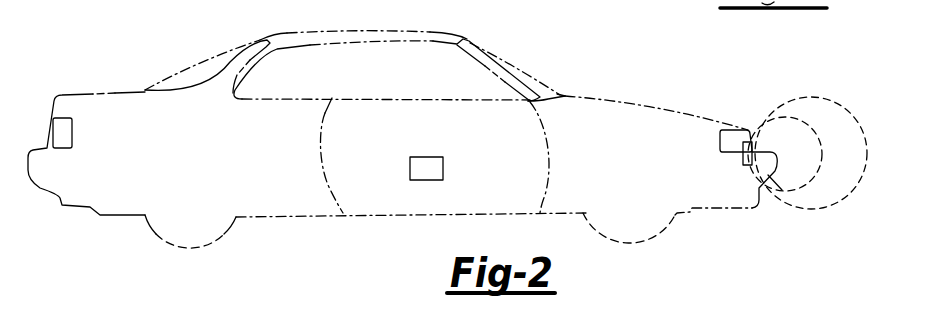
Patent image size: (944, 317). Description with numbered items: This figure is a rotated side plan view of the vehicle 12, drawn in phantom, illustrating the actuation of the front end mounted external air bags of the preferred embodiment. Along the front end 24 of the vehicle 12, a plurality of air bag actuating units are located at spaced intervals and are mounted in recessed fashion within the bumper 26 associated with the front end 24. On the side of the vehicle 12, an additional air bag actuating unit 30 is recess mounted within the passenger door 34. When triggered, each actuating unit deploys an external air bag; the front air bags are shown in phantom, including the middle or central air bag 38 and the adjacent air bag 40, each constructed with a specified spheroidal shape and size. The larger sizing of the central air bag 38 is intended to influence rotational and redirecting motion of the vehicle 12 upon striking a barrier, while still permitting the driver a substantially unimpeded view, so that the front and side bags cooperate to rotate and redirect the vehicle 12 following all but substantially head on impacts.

The vehicle 12 is at (130, 78).
The front end 24 is at (737, 123).
The bumper 26 is at (783, 192).
The air bag actuating unit 30 is at (428, 173).
The passenger door 34 is at (352, 205).
The air bag 38 is at (837, 124).
The air bag 40 is at (787, 127).